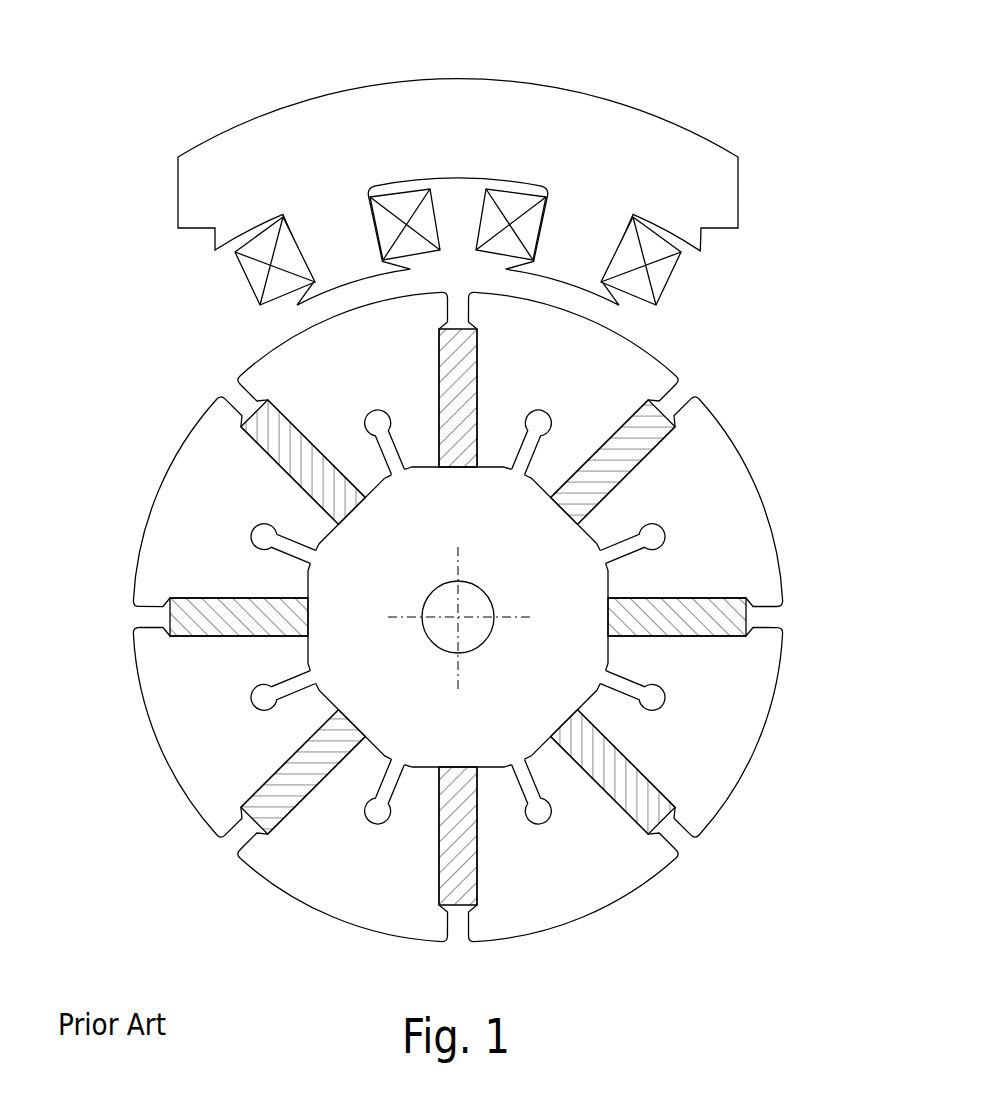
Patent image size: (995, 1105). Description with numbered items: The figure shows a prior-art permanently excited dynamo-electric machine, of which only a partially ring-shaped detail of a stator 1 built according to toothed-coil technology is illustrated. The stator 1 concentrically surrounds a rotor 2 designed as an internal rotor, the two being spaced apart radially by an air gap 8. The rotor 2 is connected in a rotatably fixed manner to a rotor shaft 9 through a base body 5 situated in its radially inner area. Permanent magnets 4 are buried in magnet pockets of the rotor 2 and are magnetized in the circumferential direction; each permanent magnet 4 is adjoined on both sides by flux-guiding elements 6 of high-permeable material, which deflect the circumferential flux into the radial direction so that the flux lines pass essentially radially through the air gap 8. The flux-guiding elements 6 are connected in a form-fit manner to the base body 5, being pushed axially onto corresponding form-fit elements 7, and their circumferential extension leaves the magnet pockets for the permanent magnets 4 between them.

The stator 1 is at (620, 101).
The rotor 2 is at (463, 617).
The permanent magnet 4 is at (745, 623).
The base body 5 is at (377, 713).
The flux-guiding element 6 is at (745, 510).
The form-fit element 7 is at (250, 683).
The air gap 8 is at (297, 317).
The rotor shaft 9 is at (427, 602).